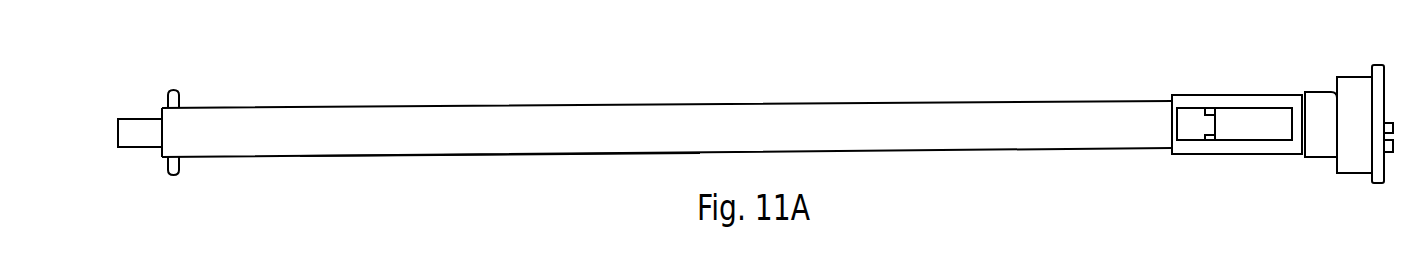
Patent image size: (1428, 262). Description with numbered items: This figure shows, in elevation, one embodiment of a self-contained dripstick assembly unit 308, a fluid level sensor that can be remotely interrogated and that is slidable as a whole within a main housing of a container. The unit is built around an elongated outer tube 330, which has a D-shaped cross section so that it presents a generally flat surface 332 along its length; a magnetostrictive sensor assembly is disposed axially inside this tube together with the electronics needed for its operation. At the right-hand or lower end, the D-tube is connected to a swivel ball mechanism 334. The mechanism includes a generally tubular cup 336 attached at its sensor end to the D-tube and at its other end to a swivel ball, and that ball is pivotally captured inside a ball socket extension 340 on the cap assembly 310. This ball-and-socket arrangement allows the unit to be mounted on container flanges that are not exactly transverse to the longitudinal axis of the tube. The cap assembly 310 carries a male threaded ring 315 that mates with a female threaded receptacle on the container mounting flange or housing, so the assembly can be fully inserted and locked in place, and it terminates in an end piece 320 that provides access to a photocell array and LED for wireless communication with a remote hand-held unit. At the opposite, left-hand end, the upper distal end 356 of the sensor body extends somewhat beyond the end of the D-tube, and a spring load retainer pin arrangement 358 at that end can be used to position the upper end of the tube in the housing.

The dripstick assembly unit 308 is at (803, 89).
The cap assembly 310 is at (1350, 75).
The male threaded ring 315 is at (1358, 142).
The end piece 320 is at (1390, 100).
The outer tube 330 is at (489, 103).
The flat surface 332 is at (318, 142).
The swivel ball mechanism 334 is at (1265, 91).
The tubular cup 336 is at (1200, 102).
The ball socket extension 340 is at (1323, 135).
The upper distal end 356 is at (140, 151).
The spring load retainer pin arrangement 358 is at (189, 89).